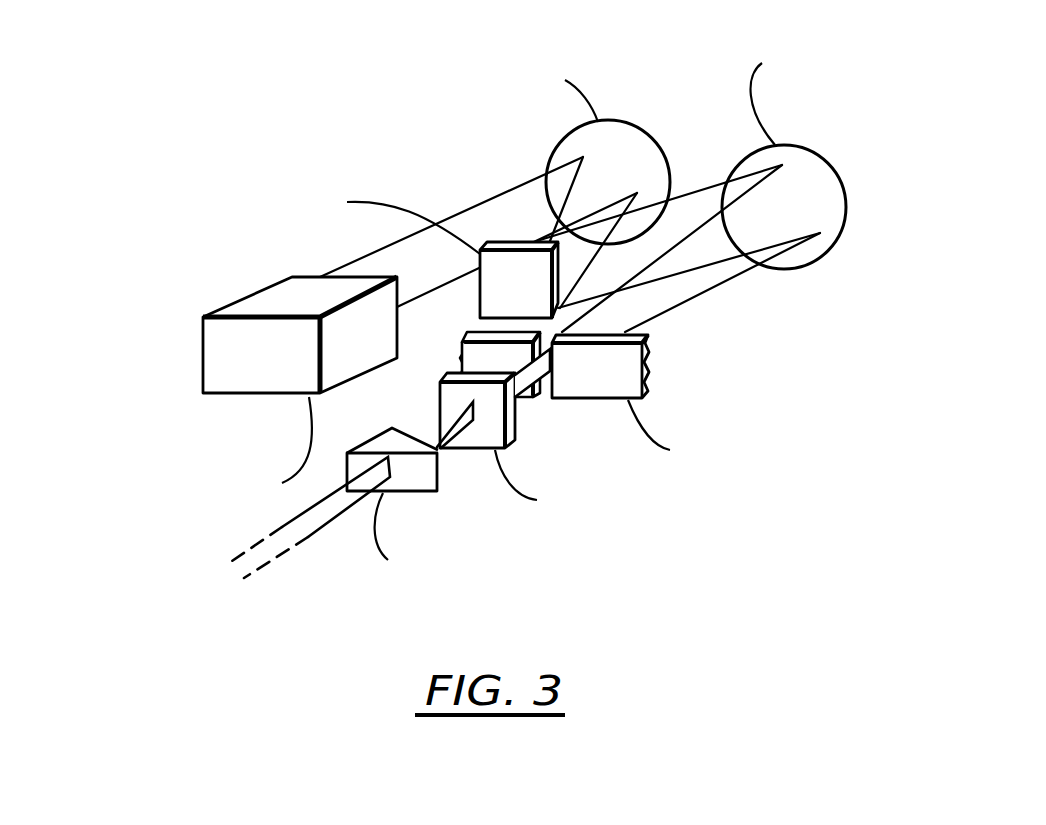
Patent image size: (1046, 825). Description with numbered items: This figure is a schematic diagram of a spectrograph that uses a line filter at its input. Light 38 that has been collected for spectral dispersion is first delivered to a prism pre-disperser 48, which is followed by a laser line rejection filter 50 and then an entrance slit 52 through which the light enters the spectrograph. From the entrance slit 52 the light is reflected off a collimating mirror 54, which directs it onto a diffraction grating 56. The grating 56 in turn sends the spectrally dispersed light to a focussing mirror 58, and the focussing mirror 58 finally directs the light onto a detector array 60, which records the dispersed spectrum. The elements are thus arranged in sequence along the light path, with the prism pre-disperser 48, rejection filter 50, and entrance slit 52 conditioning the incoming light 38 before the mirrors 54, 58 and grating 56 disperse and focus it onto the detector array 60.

The light 38 is at (310, 532).
The prism pre-disperser 48 is at (408, 492).
The laser line rejection filter 50 is at (515, 432).
The entrance slit 52 is at (545, 398).
The collimating mirror 54 is at (822, 156).
The diffraction grating 56 is at (480, 304).
The focussing mirror 58 is at (628, 123).
The detector array 60 is at (203, 335).